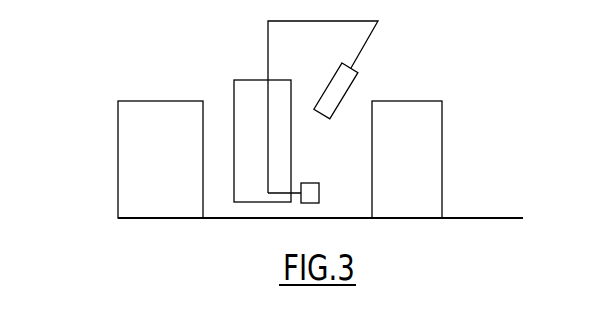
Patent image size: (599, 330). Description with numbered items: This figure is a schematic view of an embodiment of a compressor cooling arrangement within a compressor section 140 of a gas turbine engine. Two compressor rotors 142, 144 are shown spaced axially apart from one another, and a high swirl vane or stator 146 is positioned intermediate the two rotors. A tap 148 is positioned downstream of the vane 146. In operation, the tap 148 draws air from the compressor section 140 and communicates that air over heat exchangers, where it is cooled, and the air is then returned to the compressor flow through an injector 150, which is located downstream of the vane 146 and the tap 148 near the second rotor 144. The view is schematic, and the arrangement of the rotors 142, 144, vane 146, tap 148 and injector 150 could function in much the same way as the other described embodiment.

The compressor section 140 is at (81, 211).
The compressor rotor 142 is at (143, 150).
The compressor rotor 144 is at (425, 146).
The high swirl vane or stator 146 is at (252, 108).
The tap 148 is at (340, 85).
The injector 150 is at (312, 183).